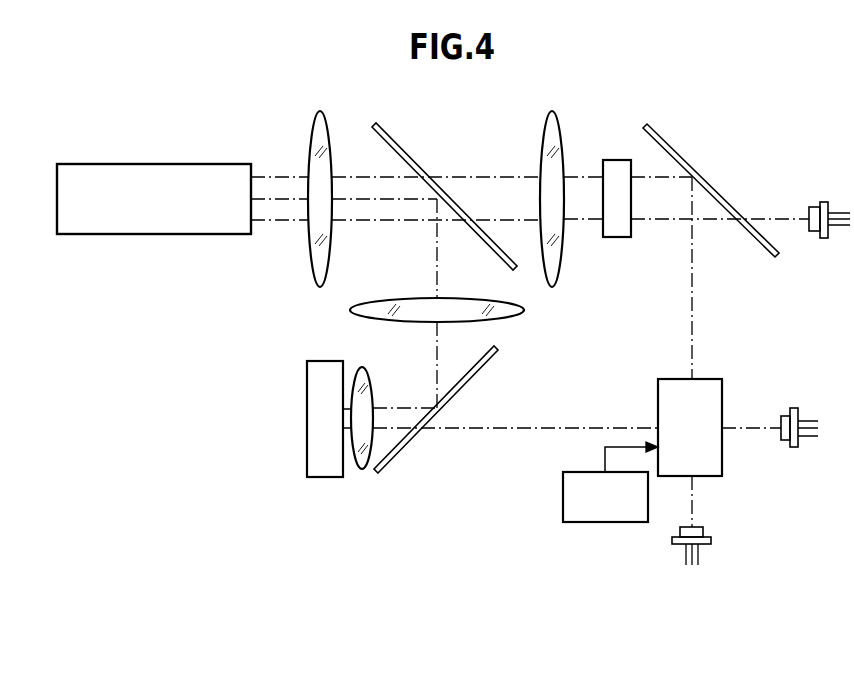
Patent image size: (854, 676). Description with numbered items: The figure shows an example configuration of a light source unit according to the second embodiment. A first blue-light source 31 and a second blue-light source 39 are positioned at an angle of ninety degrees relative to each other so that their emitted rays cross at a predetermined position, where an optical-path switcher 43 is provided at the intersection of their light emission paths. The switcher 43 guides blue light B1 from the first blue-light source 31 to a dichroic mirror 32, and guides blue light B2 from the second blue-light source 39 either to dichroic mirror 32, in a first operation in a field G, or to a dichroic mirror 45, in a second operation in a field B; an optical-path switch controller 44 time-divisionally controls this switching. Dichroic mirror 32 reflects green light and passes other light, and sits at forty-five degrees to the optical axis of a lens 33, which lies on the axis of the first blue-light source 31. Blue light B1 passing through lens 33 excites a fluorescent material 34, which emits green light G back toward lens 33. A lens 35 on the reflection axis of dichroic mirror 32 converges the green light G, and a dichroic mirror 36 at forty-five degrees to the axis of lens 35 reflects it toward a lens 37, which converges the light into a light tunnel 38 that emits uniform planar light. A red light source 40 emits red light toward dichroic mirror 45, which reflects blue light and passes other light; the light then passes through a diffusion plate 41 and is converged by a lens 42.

The light tunnel 38 is at (193, 164).
The lens 37 is at (310, 140).
The dichroic mirror 36 is at (405, 155).
The lens 35 is at (397, 298).
The lens 42 is at (542, 140).
The diffusion plate 41 is at (617, 160).
The dichroic mirror 45 is at (678, 148).
The red light source 40 is at (822, 202).
The fluorescent material 34 is at (307, 426).
The lens 33 is at (361, 367).
The dichroic mirror 32 is at (472, 386).
The optical-path switcher 43 is at (668, 379).
The optical-path switch controller 44 is at (563, 498).
The first blue-light source 31 is at (791, 408).
The second blue-light source 39 is at (711, 540).
The field B is at (788, 216).
The green light G is at (396, 405).
The blue light B1 is at (740, 424).
The blue light B2 is at (693, 275).